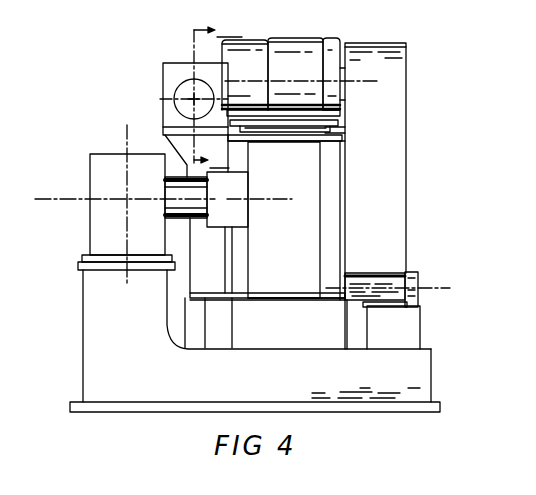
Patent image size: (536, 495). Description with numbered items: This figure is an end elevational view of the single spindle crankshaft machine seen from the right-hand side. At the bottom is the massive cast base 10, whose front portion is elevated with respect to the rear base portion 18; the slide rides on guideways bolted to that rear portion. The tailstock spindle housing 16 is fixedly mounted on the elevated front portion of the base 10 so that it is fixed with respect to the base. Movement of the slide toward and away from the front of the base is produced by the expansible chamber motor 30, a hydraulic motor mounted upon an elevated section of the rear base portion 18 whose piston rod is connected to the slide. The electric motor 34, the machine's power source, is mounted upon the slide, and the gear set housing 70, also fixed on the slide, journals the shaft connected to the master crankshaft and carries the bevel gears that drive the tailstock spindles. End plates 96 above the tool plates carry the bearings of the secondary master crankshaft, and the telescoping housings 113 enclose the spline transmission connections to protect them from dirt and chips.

The cast base 10 is at (131, 359).
The tailstock spindle housing 16 is at (90, 204).
The rear base portion 18 is at (329, 352).
The expansible chamber motor 30 is at (415, 272).
The electric motor 34 is at (288, 41).
The gear set housing 70 is at (265, 241).
The end plates 96 is at (173, 63).
The telescoping housings 113 is at (190, 218).